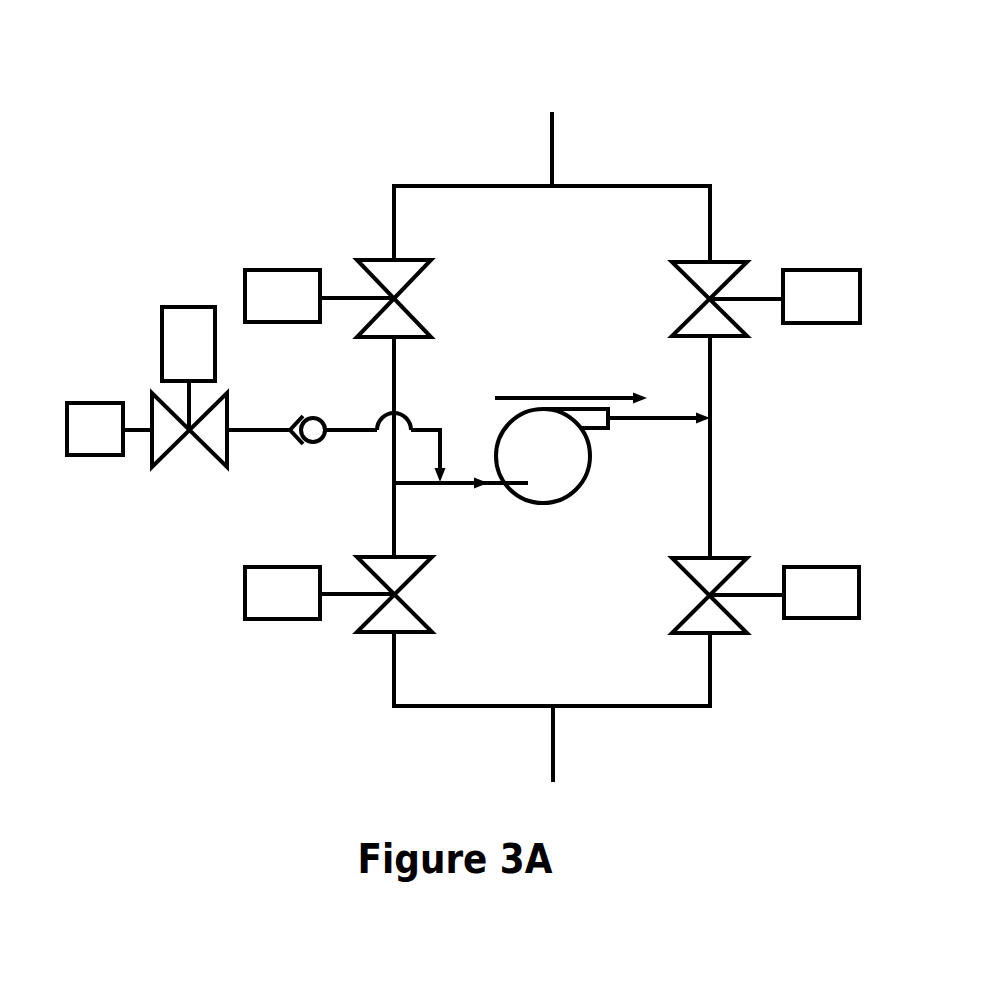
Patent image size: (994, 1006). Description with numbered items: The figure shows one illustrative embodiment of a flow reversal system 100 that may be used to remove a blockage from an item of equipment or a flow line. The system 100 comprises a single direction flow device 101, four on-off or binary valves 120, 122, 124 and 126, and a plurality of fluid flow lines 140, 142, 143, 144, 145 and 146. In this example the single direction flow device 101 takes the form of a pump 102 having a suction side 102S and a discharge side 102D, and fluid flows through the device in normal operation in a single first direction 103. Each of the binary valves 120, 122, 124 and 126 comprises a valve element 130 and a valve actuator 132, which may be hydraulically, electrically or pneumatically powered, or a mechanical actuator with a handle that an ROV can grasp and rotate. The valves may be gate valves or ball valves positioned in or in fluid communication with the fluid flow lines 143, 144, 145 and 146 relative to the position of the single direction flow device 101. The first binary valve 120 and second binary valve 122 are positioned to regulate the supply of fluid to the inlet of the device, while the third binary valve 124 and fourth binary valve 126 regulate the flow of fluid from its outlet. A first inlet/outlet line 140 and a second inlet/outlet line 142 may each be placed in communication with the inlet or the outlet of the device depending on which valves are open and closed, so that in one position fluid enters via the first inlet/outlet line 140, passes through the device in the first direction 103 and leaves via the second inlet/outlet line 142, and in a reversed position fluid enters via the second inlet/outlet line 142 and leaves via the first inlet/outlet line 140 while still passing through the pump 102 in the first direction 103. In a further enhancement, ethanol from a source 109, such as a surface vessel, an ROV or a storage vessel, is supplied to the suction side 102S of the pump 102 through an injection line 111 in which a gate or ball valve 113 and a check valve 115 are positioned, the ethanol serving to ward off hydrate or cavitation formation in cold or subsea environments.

The flow reversal system 100 is at (325, 94).
The single direction flow device 101 is at (552, 421).
The pump 102 is at (532, 427).
The suction side 102S is at (492, 488).
The discharge side 102D is at (633, 423).
The first direction 103 is at (557, 398).
The source 109 is at (97, 423).
The injection line 111 is at (353, 427).
The gate or ball valve 113 is at (184, 447).
The check valve 115 is at (296, 395).
The first binary valve 120 is at (313, 233).
The second binary valve 122 is at (330, 652).
The third binary valve 124 is at (813, 233).
The fourth binary valve 126 is at (782, 593).
The valve element 130 is at (712, 567).
The valve actuator 132 is at (817, 587).
The first inlet/outlet line 140 is at (552, 138).
The second inlet/outlet line 142 is at (553, 725).
The fluid flow line 143 is at (628, 186).
The fluid flow line 144 is at (398, 388).
The fluid flow line 145 is at (712, 410).
The fluid flow line 146 is at (677, 706).